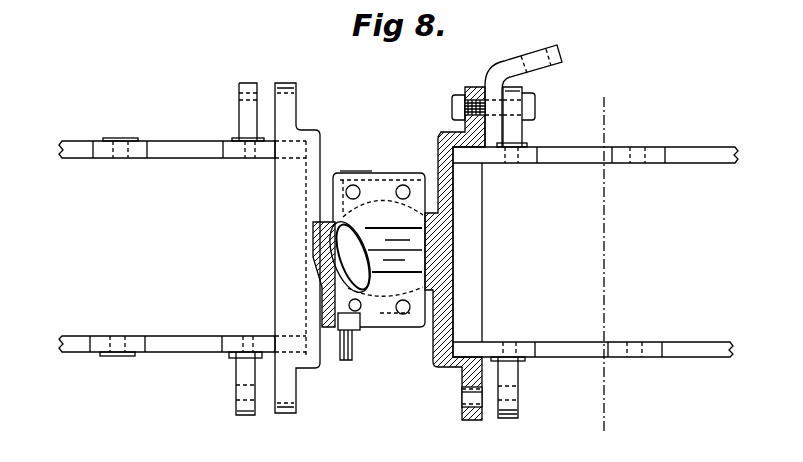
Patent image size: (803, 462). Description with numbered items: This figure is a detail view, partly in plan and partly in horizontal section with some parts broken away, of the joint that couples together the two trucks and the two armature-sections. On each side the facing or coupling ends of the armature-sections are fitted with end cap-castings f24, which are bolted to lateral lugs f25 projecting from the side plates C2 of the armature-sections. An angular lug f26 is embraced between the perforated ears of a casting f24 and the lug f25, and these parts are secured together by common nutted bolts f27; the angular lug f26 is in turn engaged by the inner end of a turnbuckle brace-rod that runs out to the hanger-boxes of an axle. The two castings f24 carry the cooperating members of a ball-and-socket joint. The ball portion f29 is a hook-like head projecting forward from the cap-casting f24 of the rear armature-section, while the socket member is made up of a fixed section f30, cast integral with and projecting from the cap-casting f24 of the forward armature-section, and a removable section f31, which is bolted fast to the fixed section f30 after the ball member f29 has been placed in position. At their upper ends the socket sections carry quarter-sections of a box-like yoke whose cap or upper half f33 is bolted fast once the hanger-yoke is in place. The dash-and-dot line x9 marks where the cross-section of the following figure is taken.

The side plates C2 is at (708, 385).
The end cap-castings f24 is at (308, 138).
The lateral lugs f25 is at (568, 420).
The angular lugs f26 is at (533, 35).
The nutted bolts f27 is at (450, 112).
The ball portion f29 is at (318, 272).
The fixed section f30 is at (327, 197).
The removable section f31 is at (347, 348).
The cap or upper half f33 is at (387, 188).
The section line x9 is at (609, 443).